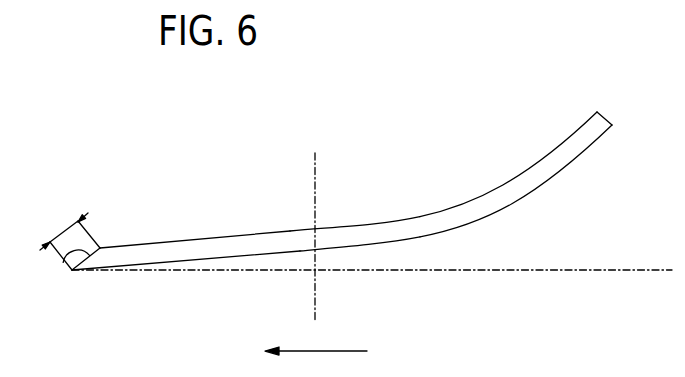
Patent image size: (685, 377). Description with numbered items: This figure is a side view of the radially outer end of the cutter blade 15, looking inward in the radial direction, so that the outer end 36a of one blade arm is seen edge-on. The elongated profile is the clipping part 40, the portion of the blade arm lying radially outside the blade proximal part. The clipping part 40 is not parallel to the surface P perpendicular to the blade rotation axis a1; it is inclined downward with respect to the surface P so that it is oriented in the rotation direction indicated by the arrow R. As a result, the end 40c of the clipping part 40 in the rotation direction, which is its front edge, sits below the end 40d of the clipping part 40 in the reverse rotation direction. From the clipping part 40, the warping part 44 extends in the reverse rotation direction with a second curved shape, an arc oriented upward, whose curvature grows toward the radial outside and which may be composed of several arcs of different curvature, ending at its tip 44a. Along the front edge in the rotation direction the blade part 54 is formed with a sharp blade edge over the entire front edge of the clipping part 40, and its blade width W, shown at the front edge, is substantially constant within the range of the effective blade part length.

The cutter blade 15 is at (351, 202).
The clipping part 40 is at (246, 259).
The end of the clipping part in the rotation direction 40c is at (93, 263).
The end of the clipping part in the reverse rotation direction 40d is at (363, 235).
The outer end of the cutter blade 36a is at (188, 250).
The warping part 44 is at (525, 149).
The distal end of curved portion 44a is at (603, 110).
The blade part 54 is at (63, 262).
The blade width W is at (70, 239).
The blade rotation axis a1 is at (372, 225).
The surface perpendicular to the blade rotation axis P is at (603, 270).
The arrow indicating the rotation direction R is at (324, 352).